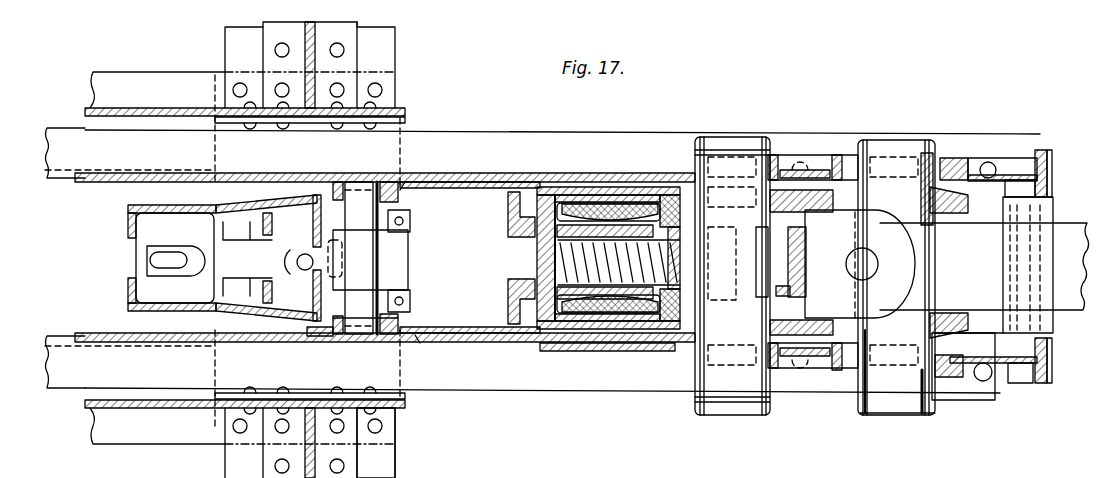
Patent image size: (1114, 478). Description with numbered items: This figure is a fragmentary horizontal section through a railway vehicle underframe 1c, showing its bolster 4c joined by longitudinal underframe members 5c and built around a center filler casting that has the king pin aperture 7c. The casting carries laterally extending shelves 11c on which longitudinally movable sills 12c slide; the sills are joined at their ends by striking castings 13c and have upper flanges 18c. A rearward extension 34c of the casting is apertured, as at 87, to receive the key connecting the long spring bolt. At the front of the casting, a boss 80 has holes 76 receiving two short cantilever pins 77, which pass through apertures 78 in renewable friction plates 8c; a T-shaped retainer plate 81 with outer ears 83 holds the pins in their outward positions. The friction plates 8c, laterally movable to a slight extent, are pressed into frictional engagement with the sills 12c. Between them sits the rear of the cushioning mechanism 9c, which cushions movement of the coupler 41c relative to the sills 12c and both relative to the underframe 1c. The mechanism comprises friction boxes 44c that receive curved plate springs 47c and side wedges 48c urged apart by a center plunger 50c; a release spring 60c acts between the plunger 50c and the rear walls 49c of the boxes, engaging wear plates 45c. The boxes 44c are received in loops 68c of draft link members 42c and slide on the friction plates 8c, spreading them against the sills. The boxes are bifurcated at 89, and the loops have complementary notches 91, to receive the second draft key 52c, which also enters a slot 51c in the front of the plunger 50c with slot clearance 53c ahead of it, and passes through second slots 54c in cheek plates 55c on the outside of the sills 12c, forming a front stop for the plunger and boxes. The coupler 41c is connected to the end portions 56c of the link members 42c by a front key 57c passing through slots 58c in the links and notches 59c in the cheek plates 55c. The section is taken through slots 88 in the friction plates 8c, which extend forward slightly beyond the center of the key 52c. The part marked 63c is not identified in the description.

The railway vehicle underframe 1c is at (385, 42).
The bolster 4c is at (382, 470).
The longitudinal underframe members 5c is at (140, 78).
The king pin aperture 7c is at (297, 262).
The friction plates 8c is at (472, 190).
The cushioning mechanism 9c is at (572, 345).
The shelves 11c is at (405, 127).
The sills 12c is at (472, 182).
The striking castings 13c is at (1043, 152).
The upper flanges 18c is at (55, 135).
The rearward extension 34c is at (128, 228).
The coupler 41c is at (1065, 222).
The draft link members 42c is at (797, 192).
The friction boxes 44c is at (602, 203).
The wear plates 45c is at (540, 182).
The curved plate springs 47c is at (625, 185).
The side wedges 48c is at (537, 262).
The rear walls 49c is at (555, 280).
The center plunger 50c is at (806, 267).
The slot 51c is at (800, 247).
The second draft key 52c is at (731, 137).
The slot clearance 53c is at (782, 291).
The second slots 54c is at (773, 155).
The cheek plates 55c is at (835, 158).
The end portions 56c is at (952, 213).
The front key 57c is at (907, 413).
The slots 58c is at (873, 335).
The notches 59c is at (847, 367).
The release spring 60c is at (682, 272).
The bearing block 63c is at (942, 158).
The loops 68c is at (512, 222).
The apertures 76 is at (400, 320).
The cantilever pins 77 is at (350, 295).
The apertures 78 is at (393, 172).
The front boss 80 is at (407, 182).
The T-shaped retainer plate 81 is at (409, 267).
The outer ears 83 is at (412, 214).
The aperture 87 is at (165, 262).
The slots 88 is at (612, 225).
The notches 89 is at (672, 195).
The notch 91 is at (756, 240).